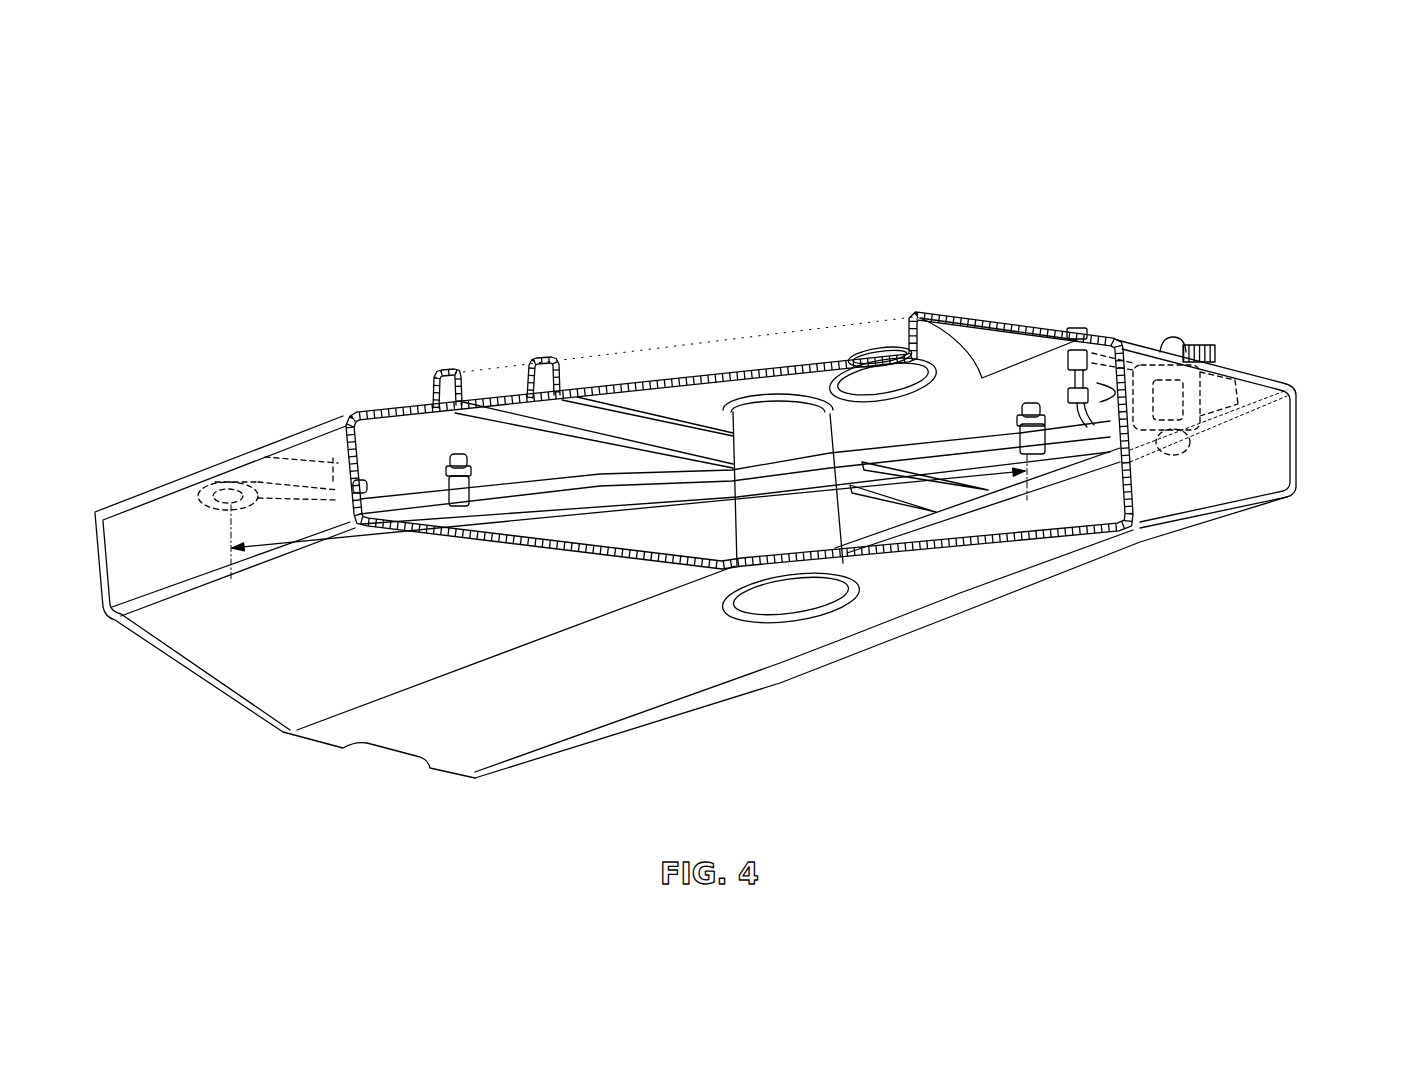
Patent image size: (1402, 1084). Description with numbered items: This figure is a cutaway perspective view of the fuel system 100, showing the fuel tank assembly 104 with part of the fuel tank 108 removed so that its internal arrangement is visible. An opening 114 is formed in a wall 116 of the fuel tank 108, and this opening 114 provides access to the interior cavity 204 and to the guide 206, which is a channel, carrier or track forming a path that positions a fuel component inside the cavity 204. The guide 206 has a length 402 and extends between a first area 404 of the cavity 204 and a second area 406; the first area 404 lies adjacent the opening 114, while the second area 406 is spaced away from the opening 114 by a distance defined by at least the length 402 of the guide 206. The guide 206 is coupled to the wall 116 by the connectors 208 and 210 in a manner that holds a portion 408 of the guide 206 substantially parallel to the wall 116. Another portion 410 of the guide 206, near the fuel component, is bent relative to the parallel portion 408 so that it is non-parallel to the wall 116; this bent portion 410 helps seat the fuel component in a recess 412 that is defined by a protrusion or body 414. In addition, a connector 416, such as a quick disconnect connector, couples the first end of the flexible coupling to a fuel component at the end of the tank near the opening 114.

The fuel system 100 is at (1176, 180).
The fuel tank assembly 104 is at (1232, 308).
The fuel tank 108 is at (915, 633).
The opening 114 is at (1217, 388).
The wall 116 is at (770, 368).
The cavity 204 is at (673, 537).
The guide 206 is at (717, 463).
The connector 208 is at (1030, 405).
The connector 210 is at (457, 457).
The length 402 is at (537, 517).
The first area 404 is at (1247, 467).
The second area 406 is at (237, 663).
The portion of the guide 408 is at (637, 480).
The bent portion of the guide 410 is at (333, 477).
The recess 412 is at (277, 483).
The body 414 is at (243, 455).
The connector 416 is at (1077, 383).